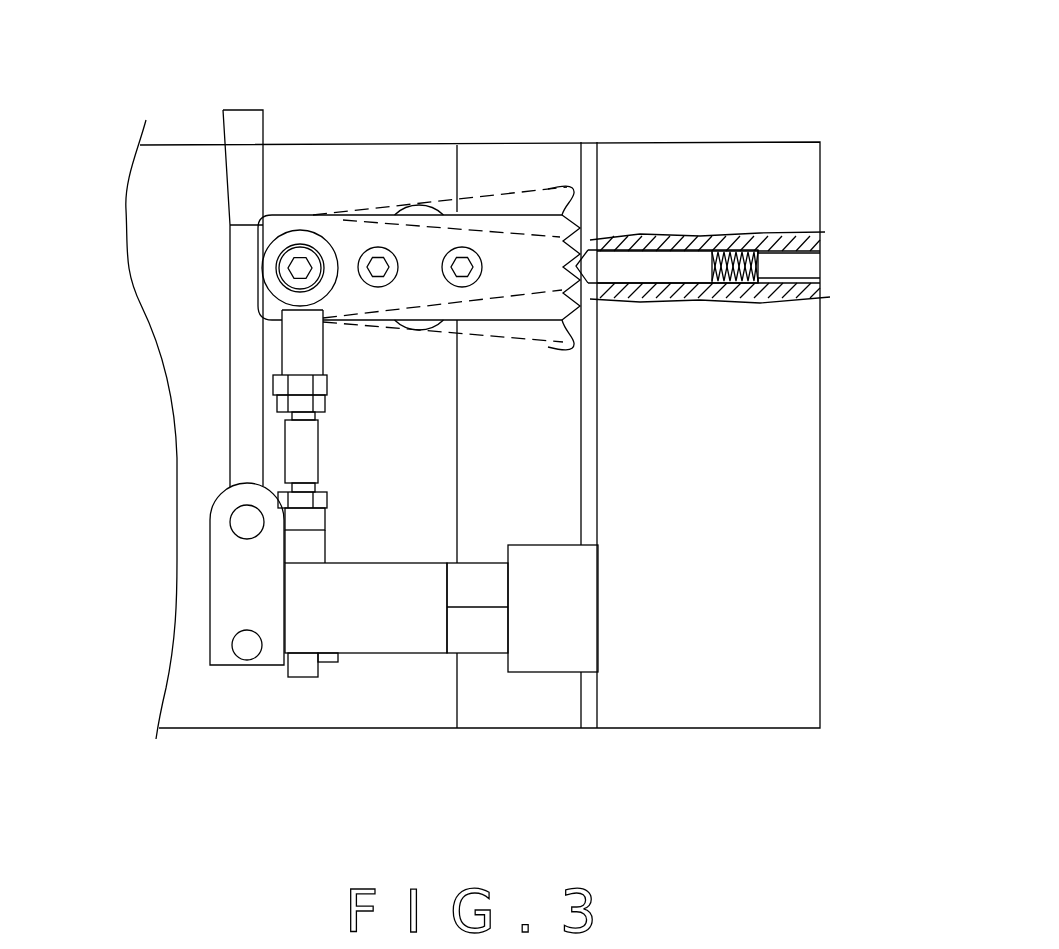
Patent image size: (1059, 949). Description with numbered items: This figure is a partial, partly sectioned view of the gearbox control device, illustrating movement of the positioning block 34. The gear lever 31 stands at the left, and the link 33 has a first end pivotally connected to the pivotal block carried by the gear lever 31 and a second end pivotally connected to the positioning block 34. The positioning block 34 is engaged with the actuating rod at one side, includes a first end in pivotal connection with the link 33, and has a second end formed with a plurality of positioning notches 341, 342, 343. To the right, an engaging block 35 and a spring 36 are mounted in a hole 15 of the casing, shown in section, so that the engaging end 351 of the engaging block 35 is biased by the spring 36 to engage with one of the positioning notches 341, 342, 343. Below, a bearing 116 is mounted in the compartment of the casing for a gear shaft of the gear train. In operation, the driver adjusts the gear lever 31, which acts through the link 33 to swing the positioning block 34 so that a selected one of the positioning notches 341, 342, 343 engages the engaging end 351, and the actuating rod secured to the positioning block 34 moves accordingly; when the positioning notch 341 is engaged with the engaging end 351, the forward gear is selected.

The hole 15 is at (700, 240).
The gear lever 31 is at (243, 205).
The link 33 is at (302, 356).
The positioning block 34 is at (568, 199).
The positioning notch 341 is at (590, 300).
The positioning notch 342 is at (582, 225).
The positioning notch 343 is at (560, 215).
The engaging block 35 is at (698, 158).
The engaging end 351 is at (590, 240).
The spring 36 is at (735, 252).
The bearing 116 is at (385, 623).